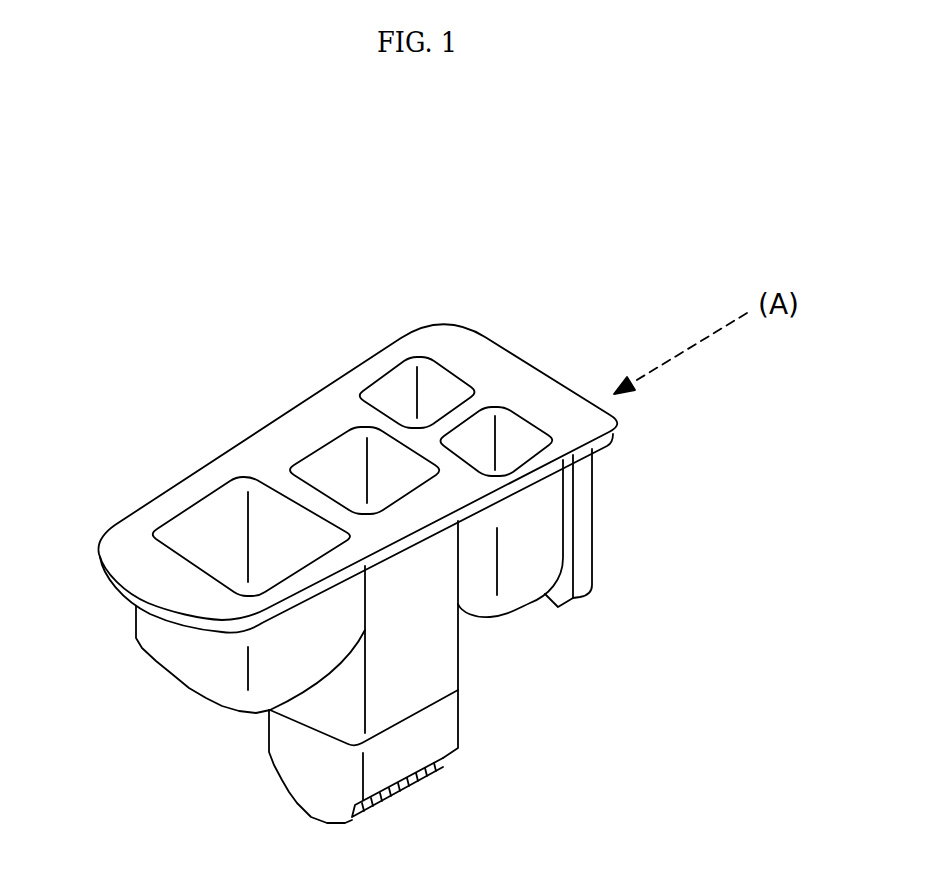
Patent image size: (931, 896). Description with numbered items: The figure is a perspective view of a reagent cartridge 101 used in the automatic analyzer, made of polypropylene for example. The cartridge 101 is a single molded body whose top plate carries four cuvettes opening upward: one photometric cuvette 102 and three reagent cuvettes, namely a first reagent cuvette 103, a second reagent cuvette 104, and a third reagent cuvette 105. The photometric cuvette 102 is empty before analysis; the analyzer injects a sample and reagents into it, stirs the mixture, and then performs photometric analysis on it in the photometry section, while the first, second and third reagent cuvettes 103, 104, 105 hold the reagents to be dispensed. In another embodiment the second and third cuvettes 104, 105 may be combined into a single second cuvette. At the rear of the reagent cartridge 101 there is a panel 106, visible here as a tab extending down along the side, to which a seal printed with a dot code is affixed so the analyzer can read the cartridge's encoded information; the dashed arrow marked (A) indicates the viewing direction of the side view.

The reagent cartridge 101 is at (453, 337).
The photometric cuvette 102 is at (350, 465).
The first reagent cuvette 103 is at (220, 525).
The second reagent cuvette 104 is at (403, 387).
The third reagent cuvette 105 is at (517, 445).
The panel 106 is at (592, 530).